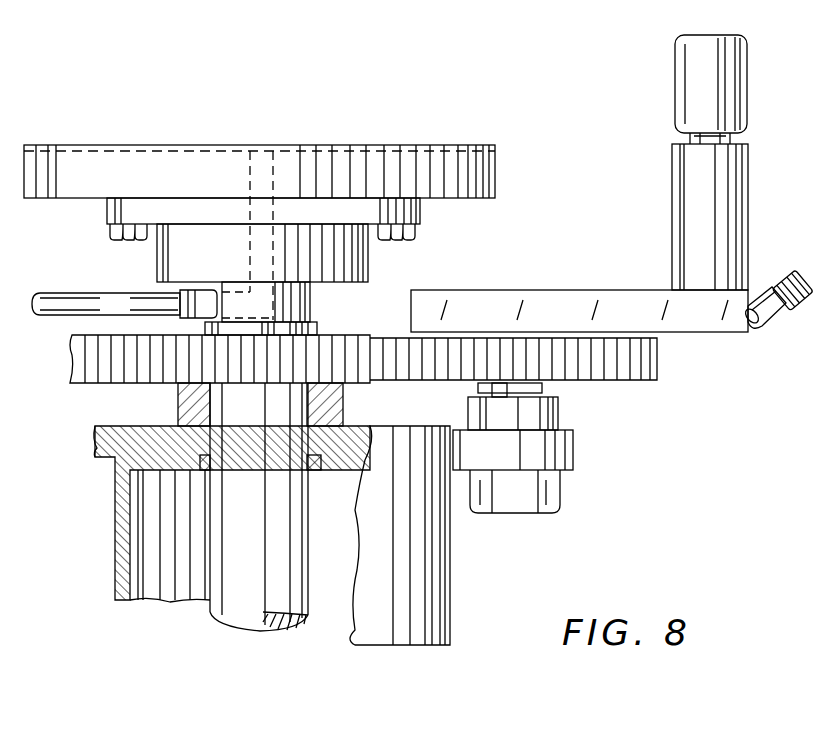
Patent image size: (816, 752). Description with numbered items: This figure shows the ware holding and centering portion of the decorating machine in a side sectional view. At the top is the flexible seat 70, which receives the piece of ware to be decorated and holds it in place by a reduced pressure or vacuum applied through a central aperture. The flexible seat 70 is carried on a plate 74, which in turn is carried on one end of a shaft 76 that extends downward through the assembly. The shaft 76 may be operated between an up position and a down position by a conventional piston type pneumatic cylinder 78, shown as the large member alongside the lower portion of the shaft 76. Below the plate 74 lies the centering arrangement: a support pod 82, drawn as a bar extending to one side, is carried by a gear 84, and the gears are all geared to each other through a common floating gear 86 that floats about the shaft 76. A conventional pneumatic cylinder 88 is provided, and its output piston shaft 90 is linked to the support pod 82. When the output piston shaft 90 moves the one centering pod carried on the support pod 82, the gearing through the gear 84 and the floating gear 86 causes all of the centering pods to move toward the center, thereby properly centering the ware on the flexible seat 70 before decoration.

The flexible seat 70 is at (233, 148).
The plate 74 is at (490, 166).
The shaft 76 is at (338, 408).
The pneumatic cylinder 78 is at (372, 637).
The support pod 82 is at (708, 330).
The gear 84 is at (75, 370).
The floating gear 86 is at (357, 335).
The pneumatic cylinder 88 is at (790, 280).
The output piston shaft 90 is at (760, 320).